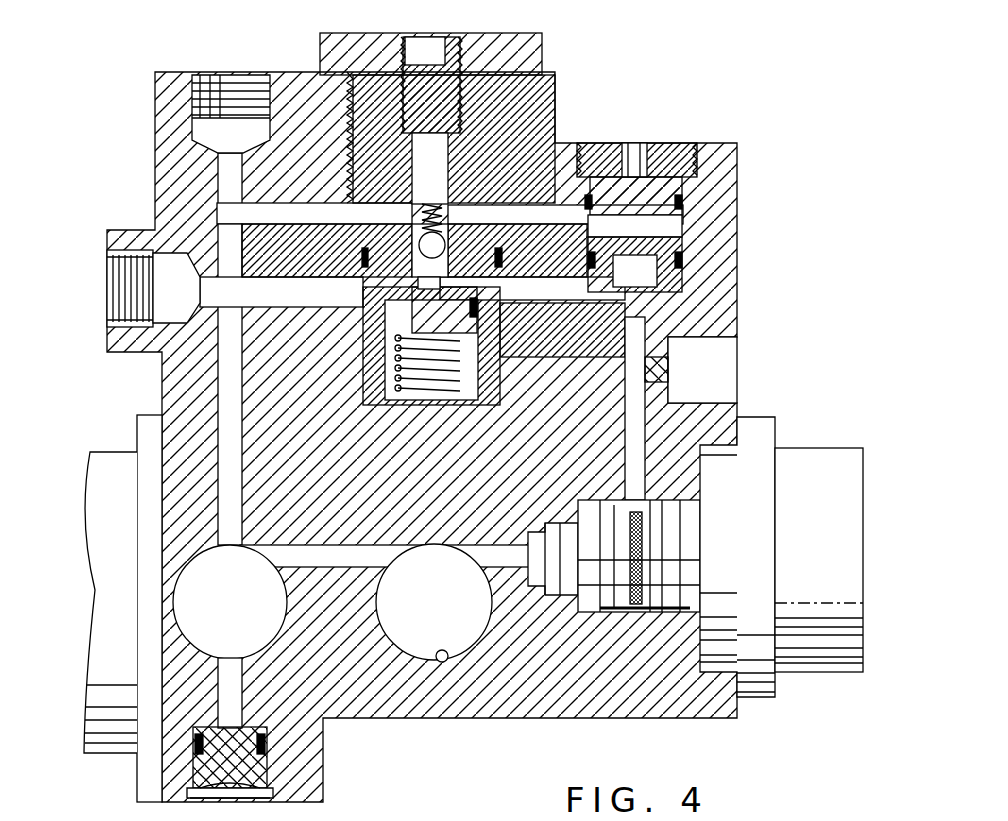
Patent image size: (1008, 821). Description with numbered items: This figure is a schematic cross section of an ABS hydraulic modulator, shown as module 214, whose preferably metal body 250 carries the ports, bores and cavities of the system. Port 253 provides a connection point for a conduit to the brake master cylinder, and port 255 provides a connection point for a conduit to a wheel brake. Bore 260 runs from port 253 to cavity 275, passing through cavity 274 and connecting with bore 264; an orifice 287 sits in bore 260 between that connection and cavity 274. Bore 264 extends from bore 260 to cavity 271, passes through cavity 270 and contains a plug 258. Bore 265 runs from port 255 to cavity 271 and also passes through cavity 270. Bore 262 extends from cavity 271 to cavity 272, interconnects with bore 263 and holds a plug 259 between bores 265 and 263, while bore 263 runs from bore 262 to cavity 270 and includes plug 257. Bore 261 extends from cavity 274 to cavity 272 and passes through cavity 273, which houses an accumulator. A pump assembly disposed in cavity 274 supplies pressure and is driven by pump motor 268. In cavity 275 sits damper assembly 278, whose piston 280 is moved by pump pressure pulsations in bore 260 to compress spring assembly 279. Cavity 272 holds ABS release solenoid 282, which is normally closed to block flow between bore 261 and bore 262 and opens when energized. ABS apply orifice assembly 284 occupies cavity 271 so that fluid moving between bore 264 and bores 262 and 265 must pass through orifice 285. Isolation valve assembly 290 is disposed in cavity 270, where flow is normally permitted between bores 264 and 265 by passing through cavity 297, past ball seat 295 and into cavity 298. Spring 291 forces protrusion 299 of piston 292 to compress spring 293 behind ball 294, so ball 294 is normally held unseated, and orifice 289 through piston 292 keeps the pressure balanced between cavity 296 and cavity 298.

The module 214 is at (703, 118).
The body 250 is at (413, 720).
The port 253 is at (197, 126).
The port 255 is at (120, 315).
The plug 257 is at (668, 372).
The plug 258 is at (210, 228).
The plug 259 is at (650, 330).
The bore 260 is at (230, 353).
The bore 261 is at (398, 719).
The bore 262 is at (690, 480).
The bore 263 is at (668, 365).
The bore 264 is at (540, 215).
The bore 265 is at (210, 287).
The pump motor 268 is at (105, 455).
The cavity 270 is at (353, 157).
The cavity 271 is at (693, 220).
The cavity 272 is at (636, 612).
The cavity 273 is at (447, 660).
The cavity 274 is at (178, 602).
The cavity 275 is at (267, 772).
The damper assembly 278 is at (222, 800).
The spring assembly 279 is at (195, 783).
The piston 280 is at (222, 757).
The ABS release solenoid 282 is at (800, 676).
The ABS apply orifice assembly 284 is at (608, 140).
The orifice 285 is at (680, 248).
The orifice 287 is at (220, 213).
The orifice 289 is at (493, 333).
The isolation valve assembly 290 is at (390, 28).
The spring 291 is at (423, 400).
The piston 292 is at (365, 383).
The spring 293 is at (452, 205).
The ball 294 is at (355, 240).
The ball seat 295 is at (487, 243).
The cavity 296 is at (470, 400).
The cavity 297 is at (353, 213).
The cavity 298 is at (470, 282).
The protrusion 299 is at (363, 307).